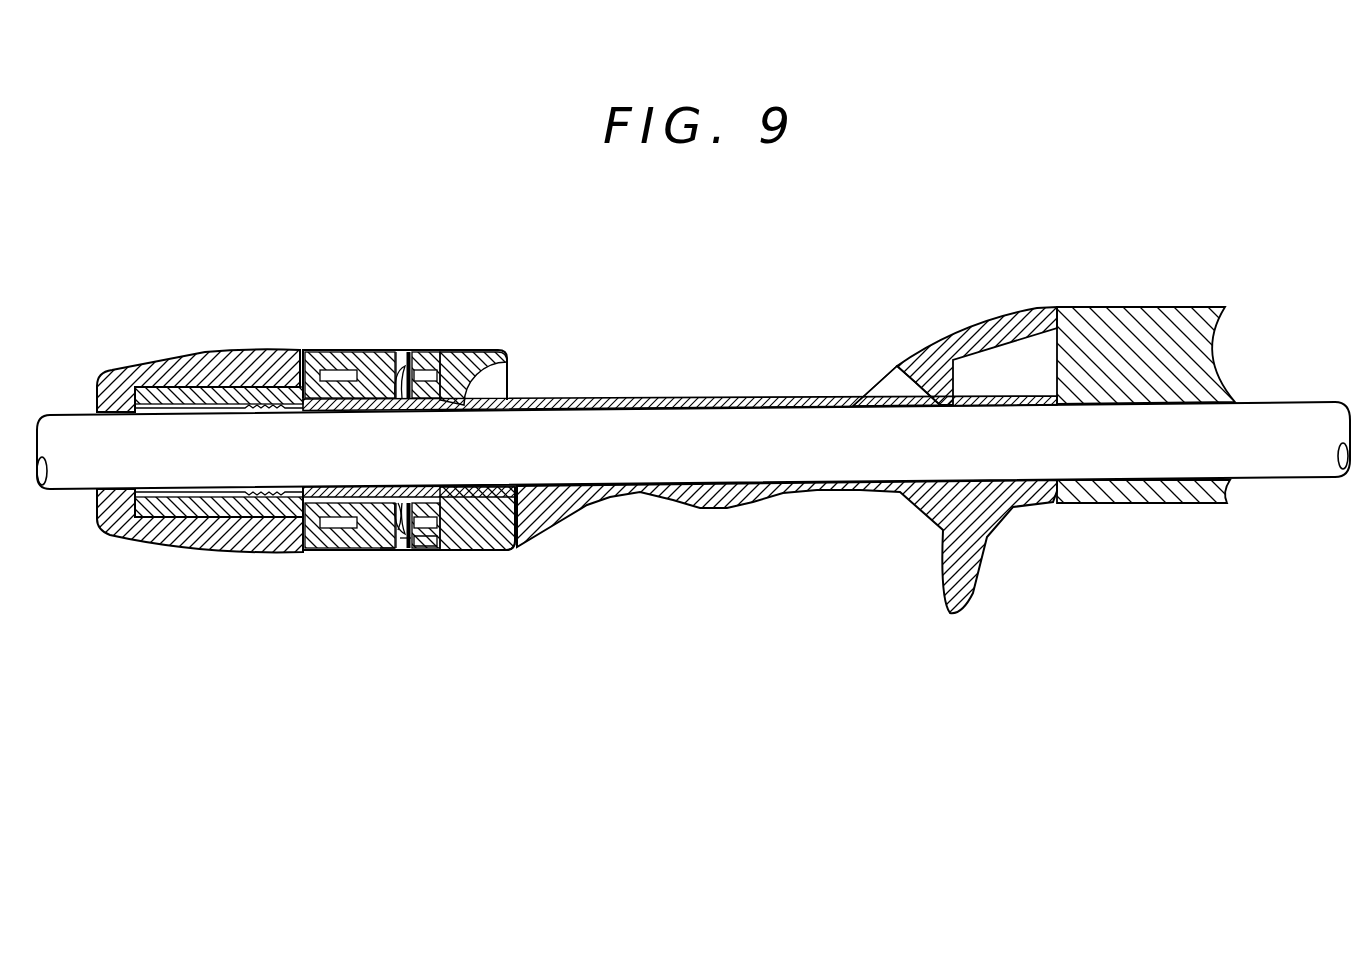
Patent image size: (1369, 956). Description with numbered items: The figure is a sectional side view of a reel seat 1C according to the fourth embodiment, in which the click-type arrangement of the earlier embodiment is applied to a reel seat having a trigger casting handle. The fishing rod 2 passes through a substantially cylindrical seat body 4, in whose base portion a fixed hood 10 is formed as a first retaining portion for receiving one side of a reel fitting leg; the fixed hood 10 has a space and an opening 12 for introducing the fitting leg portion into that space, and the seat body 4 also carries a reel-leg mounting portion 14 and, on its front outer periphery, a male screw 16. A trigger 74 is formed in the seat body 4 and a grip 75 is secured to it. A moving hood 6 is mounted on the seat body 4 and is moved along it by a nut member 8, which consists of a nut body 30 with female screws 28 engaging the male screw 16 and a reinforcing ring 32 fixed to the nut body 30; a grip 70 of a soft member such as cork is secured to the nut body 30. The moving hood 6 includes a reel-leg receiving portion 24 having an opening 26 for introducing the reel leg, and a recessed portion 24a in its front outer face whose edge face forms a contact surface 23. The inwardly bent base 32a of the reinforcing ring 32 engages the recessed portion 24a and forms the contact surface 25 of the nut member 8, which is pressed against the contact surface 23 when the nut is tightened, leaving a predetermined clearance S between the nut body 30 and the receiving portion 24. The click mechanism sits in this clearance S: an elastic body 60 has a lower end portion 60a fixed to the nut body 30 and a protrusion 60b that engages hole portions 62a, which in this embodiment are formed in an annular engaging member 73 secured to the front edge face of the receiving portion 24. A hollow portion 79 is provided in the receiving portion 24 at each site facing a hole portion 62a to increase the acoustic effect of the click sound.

The reel seat 1C is at (825, 303).
The fishing rod 2 is at (1288, 463).
The seat body 4 is at (680, 546).
The moving hood 6 is at (408, 431).
The nut member 8 is at (303, 346).
The fixed hood 10 is at (948, 338).
The housing opening 12 is at (885, 383).
The reel-leg mounting portion 14 is at (690, 398).
The male screw 16 is at (265, 352).
The contact surface 23 is at (413, 550).
The reel-leg receiving portion 24 is at (506, 432).
The recessed portion 24a is at (428, 348).
The contact surface 25 is at (423, 381).
The base of reinforcing ring 32a is at (338, 449).
The opening 26 is at (510, 388).
The female screws 28 is at (258, 412).
The nut body 30 is at (223, 527).
The reinforcing ring 32 is at (413, 391).
The elastic body 60 is at (326, 463).
The lower end portion 60a is at (347, 552).
The protrusion 60b is at (392, 352).
The hole portion 62a is at (407, 493).
The grip 70 is at (200, 448).
The engaging member 73 is at (413, 484).
The trigger 74 is at (977, 587).
The grip 75 is at (1160, 310).
The hollow portion 79 is at (443, 552).
The clearance S is at (393, 552).